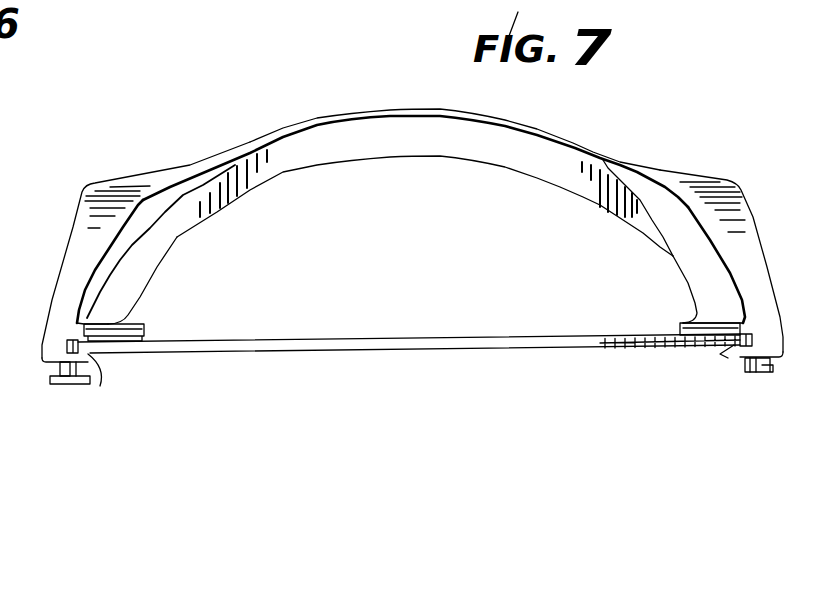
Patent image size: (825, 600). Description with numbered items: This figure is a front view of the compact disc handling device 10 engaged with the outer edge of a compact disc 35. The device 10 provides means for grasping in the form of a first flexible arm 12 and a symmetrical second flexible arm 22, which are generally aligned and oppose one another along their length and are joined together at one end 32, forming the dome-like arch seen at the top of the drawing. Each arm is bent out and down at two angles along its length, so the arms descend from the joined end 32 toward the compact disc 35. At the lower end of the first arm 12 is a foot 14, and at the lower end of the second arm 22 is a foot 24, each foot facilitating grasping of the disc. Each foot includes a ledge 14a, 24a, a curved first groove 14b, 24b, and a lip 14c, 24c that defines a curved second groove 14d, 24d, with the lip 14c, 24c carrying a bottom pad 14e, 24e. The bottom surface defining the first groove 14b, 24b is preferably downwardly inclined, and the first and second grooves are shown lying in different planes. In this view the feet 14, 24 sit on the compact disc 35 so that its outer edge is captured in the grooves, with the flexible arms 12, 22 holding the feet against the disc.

The handling device 10 is at (663, 156).
The first flexible arm 12 is at (572, 144).
The second flexible arm 22 is at (224, 156).
The joined end 32 is at (382, 118).
The foot 24 is at (62, 272).
The ledge 24a is at (127, 318).
The curved first groove 24b is at (100, 368).
The lip 24c is at (88, 384).
The curved second groove 24d is at (58, 370).
The bottom pad 24e is at (78, 385).
The foot 14 is at (763, 262).
The ledge 14a is at (690, 320).
The curved first groove 14b is at (727, 357).
The lip 14c is at (745, 372).
The curved second groove 14d is at (773, 365).
The bottom pad 14e is at (758, 368).
The base plate 35 is at (384, 350).